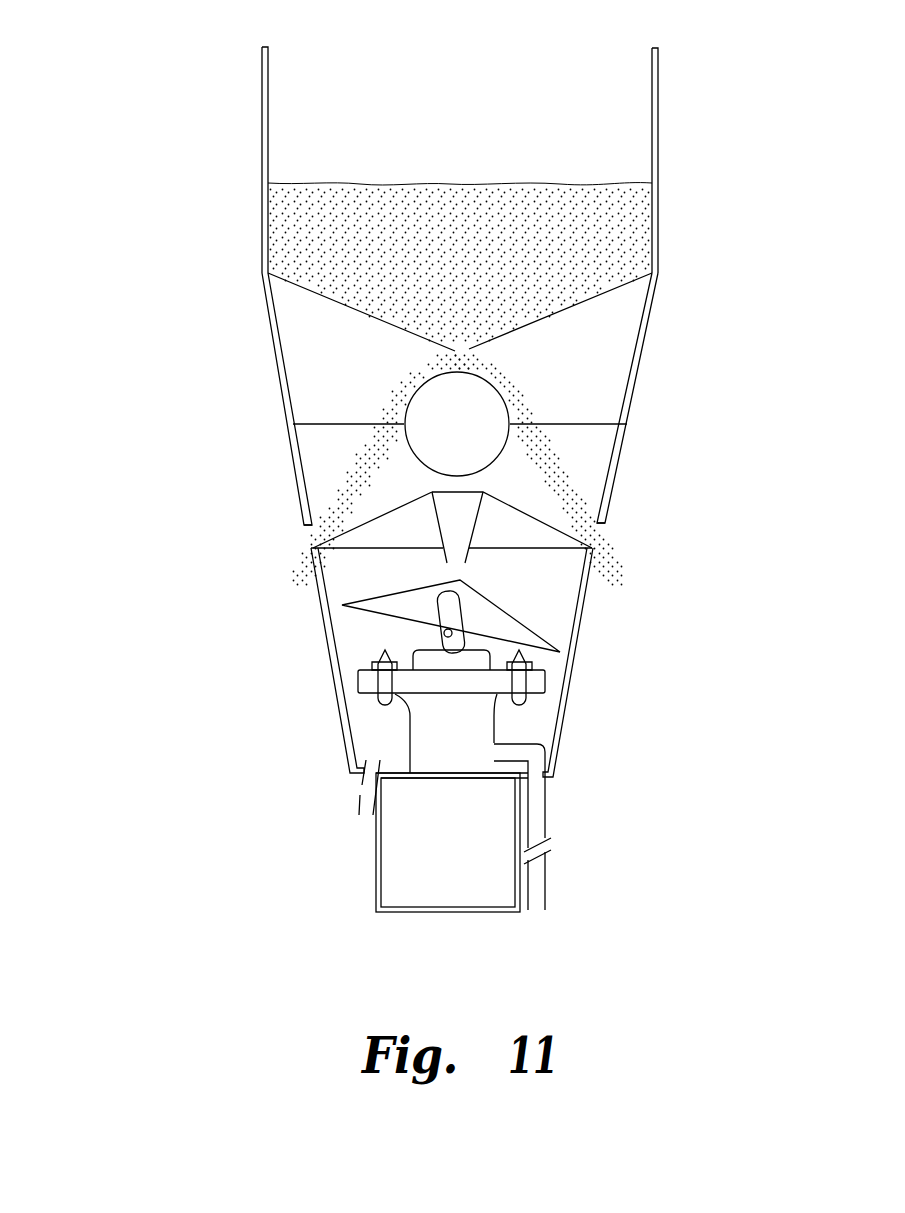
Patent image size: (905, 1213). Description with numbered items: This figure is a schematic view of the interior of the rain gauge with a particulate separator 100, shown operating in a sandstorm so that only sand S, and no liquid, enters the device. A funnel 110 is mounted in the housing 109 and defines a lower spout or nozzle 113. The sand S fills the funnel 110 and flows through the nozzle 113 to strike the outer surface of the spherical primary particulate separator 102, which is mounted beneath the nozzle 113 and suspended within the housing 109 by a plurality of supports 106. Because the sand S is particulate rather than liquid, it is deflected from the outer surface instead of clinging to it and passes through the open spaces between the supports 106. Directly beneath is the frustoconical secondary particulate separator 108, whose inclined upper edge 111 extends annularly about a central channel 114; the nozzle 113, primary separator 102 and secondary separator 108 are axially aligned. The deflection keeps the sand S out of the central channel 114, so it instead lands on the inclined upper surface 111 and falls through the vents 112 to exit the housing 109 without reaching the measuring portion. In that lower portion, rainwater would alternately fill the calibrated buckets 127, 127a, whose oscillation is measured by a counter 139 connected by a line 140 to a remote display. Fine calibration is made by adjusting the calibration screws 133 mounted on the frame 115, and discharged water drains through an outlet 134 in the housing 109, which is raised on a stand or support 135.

The rain gauge with particulate separator 100 is at (215, 153).
The sand S is at (524, 190).
The funnel 110 is at (650, 281).
The housing 109 is at (647, 316).
The nozzle 113 is at (474, 354).
The primary particulate separator 102 is at (482, 427).
The supports 106 is at (608, 418).
The secondary particulate separator 108 is at (530, 532).
The inclined upper edge 111 is at (392, 515).
The central channel 114 is at (472, 567).
The vents 112 is at (286, 527).
The counter 139 is at (427, 748).
The bucket 127 is at (407, 588).
The bucket 127a is at (533, 630).
The frame 115 is at (405, 698).
The calibration screws 133 is at (380, 655).
The outlet 134 is at (360, 815).
The stand or support 135 is at (468, 887).
The line 140 is at (546, 890).